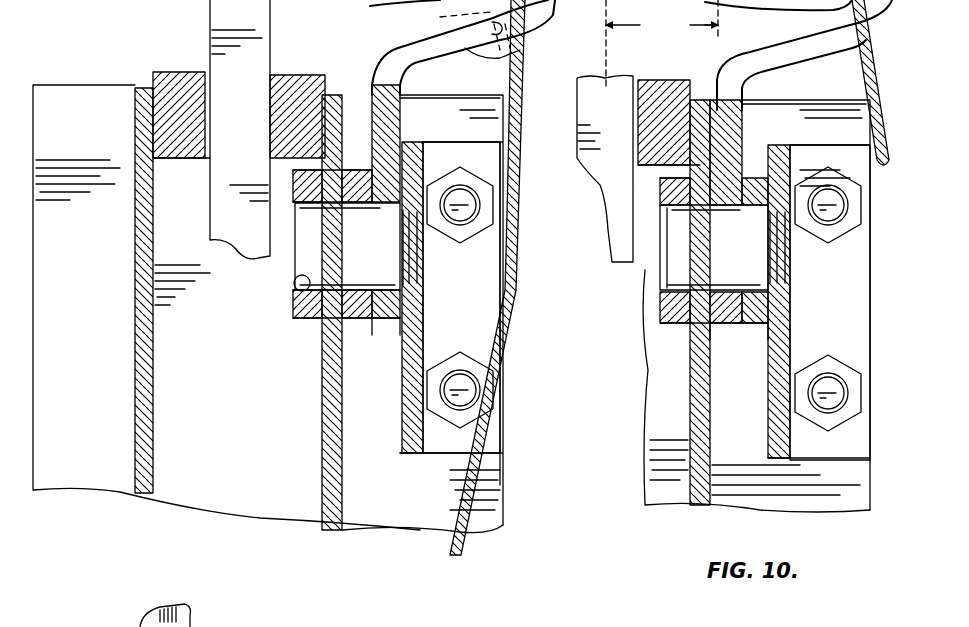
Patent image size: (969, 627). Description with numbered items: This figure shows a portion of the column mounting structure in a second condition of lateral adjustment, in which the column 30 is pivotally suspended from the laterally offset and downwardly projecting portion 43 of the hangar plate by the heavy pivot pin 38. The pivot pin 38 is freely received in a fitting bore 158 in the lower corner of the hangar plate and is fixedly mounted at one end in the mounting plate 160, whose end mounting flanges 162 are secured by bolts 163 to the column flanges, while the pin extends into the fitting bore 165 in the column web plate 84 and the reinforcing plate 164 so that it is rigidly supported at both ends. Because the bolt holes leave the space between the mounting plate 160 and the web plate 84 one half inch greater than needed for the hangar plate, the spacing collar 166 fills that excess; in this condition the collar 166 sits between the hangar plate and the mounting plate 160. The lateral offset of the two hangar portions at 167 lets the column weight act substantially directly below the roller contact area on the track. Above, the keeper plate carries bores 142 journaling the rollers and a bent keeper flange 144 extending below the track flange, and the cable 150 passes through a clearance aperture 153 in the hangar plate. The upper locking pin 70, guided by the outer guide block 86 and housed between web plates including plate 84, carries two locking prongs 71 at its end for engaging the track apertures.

The column 30 is at (90, 62).
The outer guide block 86 is at (175, 72).
The locking prong 71 is at (225, 28).
The keeper flange 144 is at (431, 101).
The clearance aperture 153 is at (445, 30).
The lateral offset of hangar portions 167 is at (500, 58).
The laterally offset downwardly projecting portion 43 is at (397, 112).
The mounting flange 162 is at (805, 470).
The fitting bore 158 is at (398, 322).
The bolt 163 is at (470, 205).
The cable 150 is at (508, 322).
The upper locking pin 70 is at (222, 216).
The pivot pin 38 is at (300, 262).
The fitting bore 165 is at (300, 285).
The reinforcing plate 164 is at (310, 318).
The column web plate 84 is at (322, 392).
The spacing collar 166 is at (352, 322).
The mounting plate 160 is at (405, 420).
The bore 142 is at (744, 150).